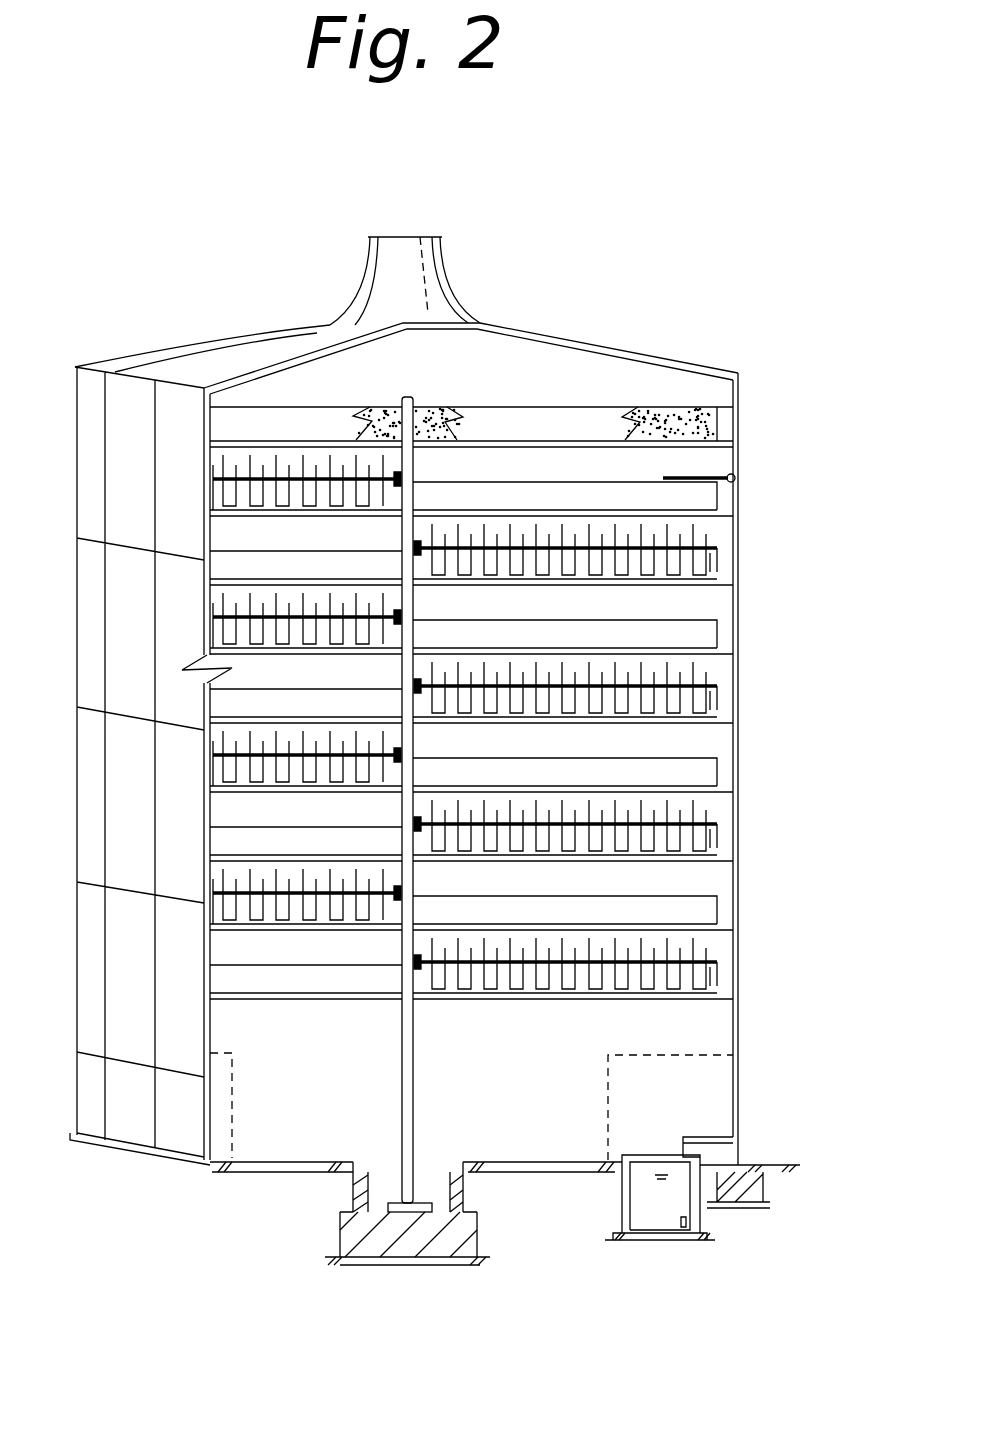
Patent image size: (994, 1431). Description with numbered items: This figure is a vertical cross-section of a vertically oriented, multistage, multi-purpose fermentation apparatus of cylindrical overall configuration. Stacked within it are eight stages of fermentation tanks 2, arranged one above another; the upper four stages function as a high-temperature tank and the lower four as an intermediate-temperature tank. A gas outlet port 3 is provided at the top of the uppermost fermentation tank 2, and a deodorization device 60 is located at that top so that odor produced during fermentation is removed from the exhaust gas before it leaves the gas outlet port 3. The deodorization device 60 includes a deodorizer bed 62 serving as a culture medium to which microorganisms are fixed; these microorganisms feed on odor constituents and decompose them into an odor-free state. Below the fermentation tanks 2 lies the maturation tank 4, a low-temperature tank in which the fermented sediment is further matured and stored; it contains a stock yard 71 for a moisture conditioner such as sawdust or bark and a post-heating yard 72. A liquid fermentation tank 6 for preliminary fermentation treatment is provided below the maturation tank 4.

The fermentation tanks 2 is at (768, 452).
The gas outlet port 3 is at (428, 276).
The maturation tank 4 is at (713, 1032).
The liquid fermentation tank 6 is at (647, 1205).
The deodorization device 60 is at (578, 406).
The deodorizer bed 62 is at (382, 407).
The stock yard 71 is at (218, 1117).
The post-heating yard 72 is at (640, 1101).